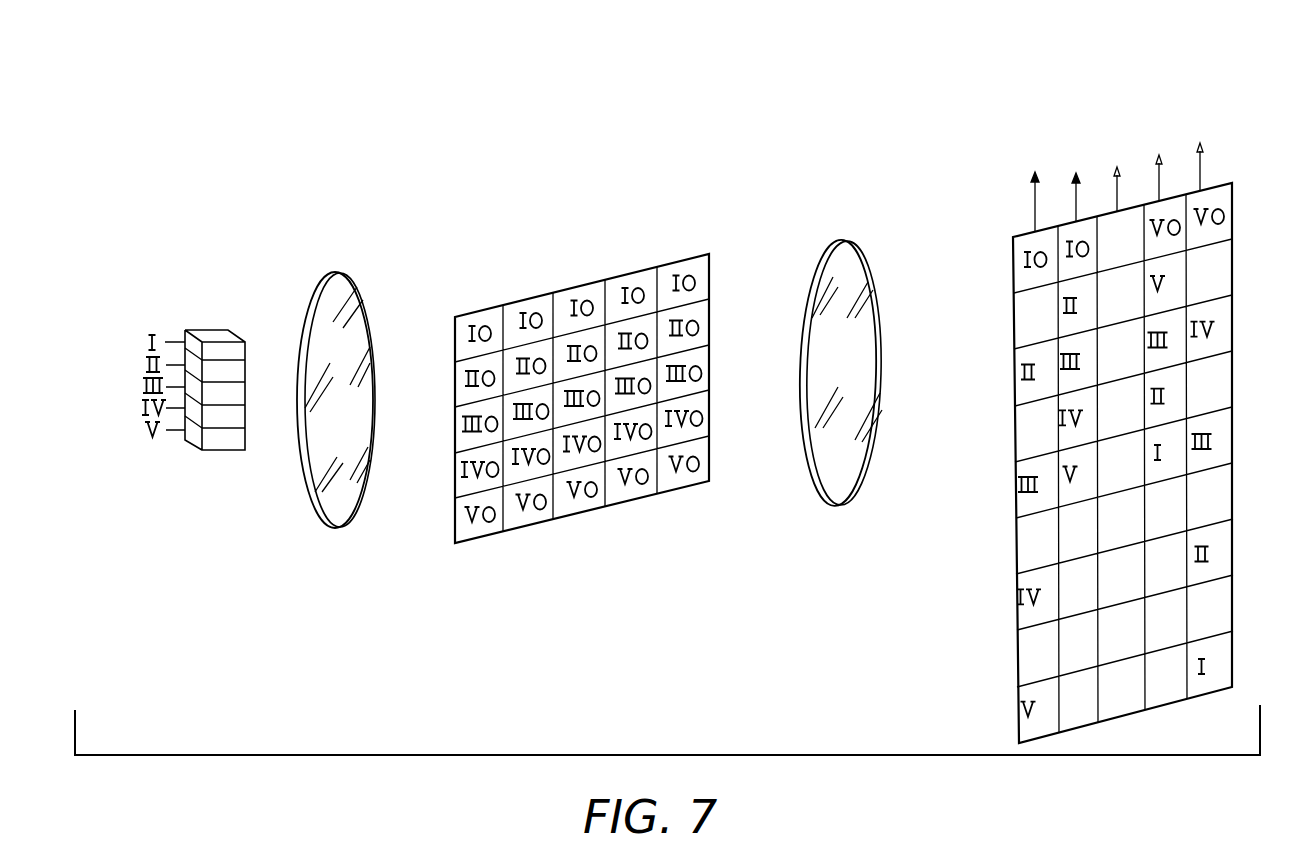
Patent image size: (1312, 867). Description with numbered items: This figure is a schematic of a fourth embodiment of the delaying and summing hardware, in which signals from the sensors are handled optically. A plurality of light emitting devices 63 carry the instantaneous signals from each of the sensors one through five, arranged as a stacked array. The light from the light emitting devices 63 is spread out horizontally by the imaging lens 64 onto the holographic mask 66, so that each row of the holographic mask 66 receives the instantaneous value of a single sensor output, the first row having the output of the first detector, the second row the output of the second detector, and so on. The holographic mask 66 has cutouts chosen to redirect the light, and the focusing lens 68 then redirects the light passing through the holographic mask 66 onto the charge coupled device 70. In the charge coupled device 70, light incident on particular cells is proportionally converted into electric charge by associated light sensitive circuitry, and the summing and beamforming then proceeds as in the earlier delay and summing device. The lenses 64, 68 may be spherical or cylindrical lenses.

The light emitting devices 63 is at (207, 327).
The imaging lens 64 is at (340, 272).
The holographic mask 66 is at (575, 286).
The focusing lens 68 is at (840, 240).
The charge coupled device 70 is at (1250, 148).